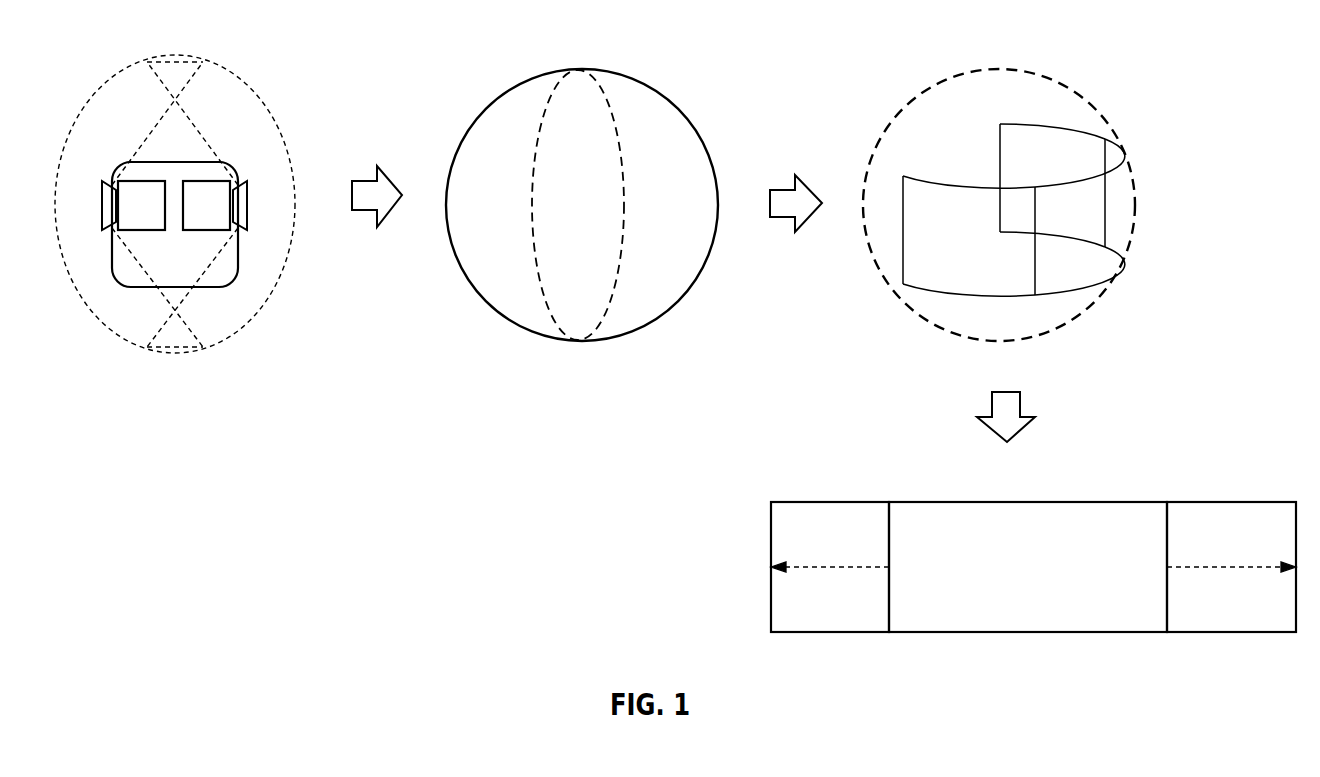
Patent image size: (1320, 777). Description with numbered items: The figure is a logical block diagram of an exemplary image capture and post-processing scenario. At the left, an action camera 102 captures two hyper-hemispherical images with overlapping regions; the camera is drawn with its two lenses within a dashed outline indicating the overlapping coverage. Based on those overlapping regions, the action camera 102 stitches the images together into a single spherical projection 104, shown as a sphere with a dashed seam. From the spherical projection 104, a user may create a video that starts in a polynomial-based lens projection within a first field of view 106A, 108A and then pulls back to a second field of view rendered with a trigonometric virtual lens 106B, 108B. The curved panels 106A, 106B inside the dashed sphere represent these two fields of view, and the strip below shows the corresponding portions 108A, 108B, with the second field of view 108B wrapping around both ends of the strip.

The action camera 102 is at (158, 266).
The spherical projection 104 is at (622, 85).
The first field of view 106A is at (1108, 176).
The second field of view 106B is at (1055, 124).
The first field of view 108A is at (1048, 610).
The second field of view 108B is at (1234, 610).